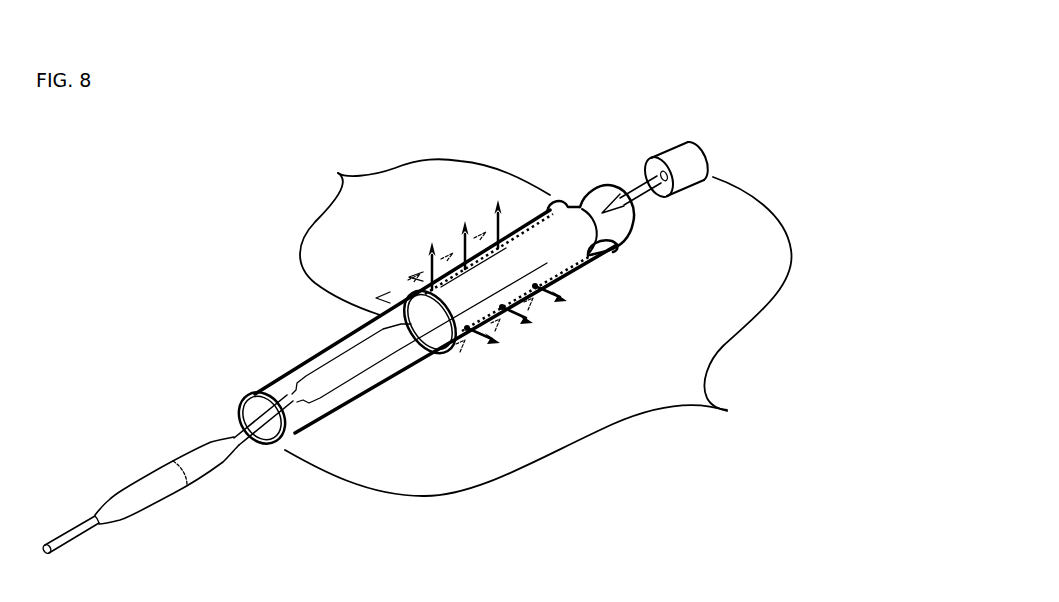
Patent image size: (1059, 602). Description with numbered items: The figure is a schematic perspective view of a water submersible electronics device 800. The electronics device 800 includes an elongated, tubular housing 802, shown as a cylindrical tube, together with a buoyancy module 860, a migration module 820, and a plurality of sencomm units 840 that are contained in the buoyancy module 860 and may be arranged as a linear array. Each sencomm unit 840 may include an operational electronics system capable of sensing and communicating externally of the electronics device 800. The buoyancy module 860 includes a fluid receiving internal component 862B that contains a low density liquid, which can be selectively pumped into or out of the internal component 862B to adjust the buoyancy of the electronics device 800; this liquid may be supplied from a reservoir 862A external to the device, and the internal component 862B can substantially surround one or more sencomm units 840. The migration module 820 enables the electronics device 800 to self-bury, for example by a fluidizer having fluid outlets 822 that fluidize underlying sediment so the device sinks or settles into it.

The electronics device 800 is at (180, 240).
The housing 802 is at (523, 206).
The migration module 820 is at (418, 276).
The fluid outlets 822 is at (488, 225).
The sencomm units 840 is at (143, 471).
The buoyancy module 860 is at (742, 413).
The reservoir 862A is at (666, 141).
The fluid receiving internal component 862B is at (320, 428).